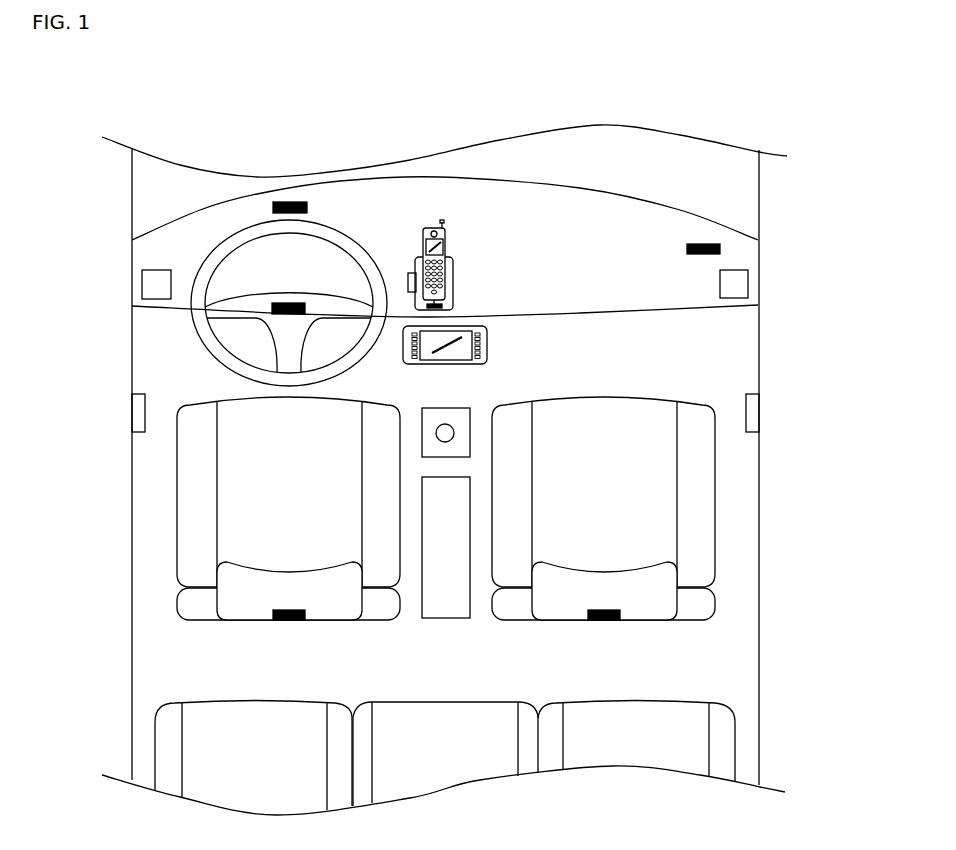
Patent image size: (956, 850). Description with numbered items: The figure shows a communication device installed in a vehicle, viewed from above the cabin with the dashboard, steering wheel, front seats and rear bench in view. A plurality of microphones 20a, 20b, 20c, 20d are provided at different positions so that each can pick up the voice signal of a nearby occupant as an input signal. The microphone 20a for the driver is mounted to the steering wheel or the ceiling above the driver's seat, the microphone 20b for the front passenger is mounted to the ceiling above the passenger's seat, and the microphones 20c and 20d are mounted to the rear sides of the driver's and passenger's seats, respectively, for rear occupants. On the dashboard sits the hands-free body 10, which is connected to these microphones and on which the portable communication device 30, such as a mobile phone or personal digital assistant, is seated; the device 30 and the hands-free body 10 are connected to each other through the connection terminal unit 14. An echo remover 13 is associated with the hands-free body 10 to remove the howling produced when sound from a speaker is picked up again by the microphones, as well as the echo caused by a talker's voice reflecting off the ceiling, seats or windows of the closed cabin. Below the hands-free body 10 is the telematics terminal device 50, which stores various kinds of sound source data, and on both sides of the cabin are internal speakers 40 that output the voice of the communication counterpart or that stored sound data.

The hands-free body 10 is at (453, 208).
The echo remover 13 is at (408, 282).
The connection terminal unit 14 is at (445, 283).
The microphone for a driver 20a is at (306, 303).
The microphone for a passenger's seat occupant 20b is at (708, 244).
The microphone for rear side of driver's seat 20c is at (285, 622).
The microphone for rear side of passenger's seat 20d is at (600, 622).
The portable communication device 30 is at (434, 231).
The internal speaker 40 is at (137, 413).
The telematics terminal device 50 is at (488, 343).